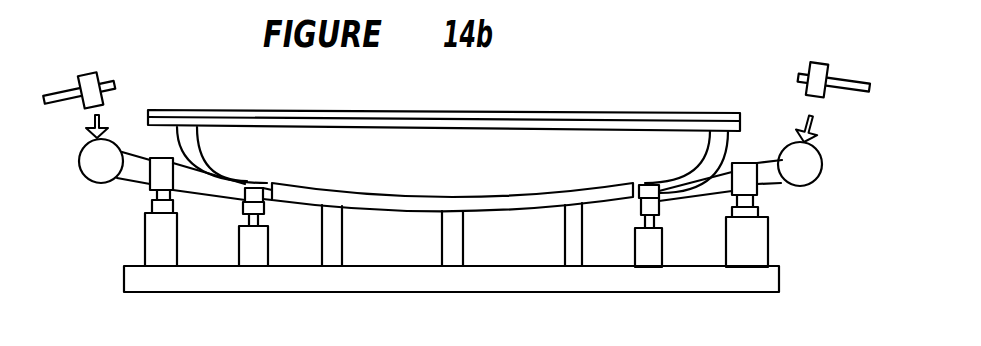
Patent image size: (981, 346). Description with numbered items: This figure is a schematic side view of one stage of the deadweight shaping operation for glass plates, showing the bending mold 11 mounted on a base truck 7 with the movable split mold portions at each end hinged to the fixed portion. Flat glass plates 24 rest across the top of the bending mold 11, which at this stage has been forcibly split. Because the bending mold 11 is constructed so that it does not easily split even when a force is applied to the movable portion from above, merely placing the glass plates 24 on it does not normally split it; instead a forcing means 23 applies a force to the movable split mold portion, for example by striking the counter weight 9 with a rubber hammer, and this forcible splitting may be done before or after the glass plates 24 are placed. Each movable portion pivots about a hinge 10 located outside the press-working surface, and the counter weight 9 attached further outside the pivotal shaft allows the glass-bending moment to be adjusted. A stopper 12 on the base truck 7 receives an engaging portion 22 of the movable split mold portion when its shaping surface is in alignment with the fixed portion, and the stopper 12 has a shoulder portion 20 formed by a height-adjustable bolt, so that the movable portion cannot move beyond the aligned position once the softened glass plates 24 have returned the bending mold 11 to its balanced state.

The base truck 7 is at (533, 277).
The counter weight 9 is at (806, 167).
The hinge 10 is at (760, 194).
The bending mold 11 is at (307, 195).
The stopper 12 is at (648, 253).
The shoulder portion 20 is at (658, 210).
The engaging portion 22 is at (632, 196).
The forcing means 23 is at (806, 80).
The glass plates 24 is at (627, 112).